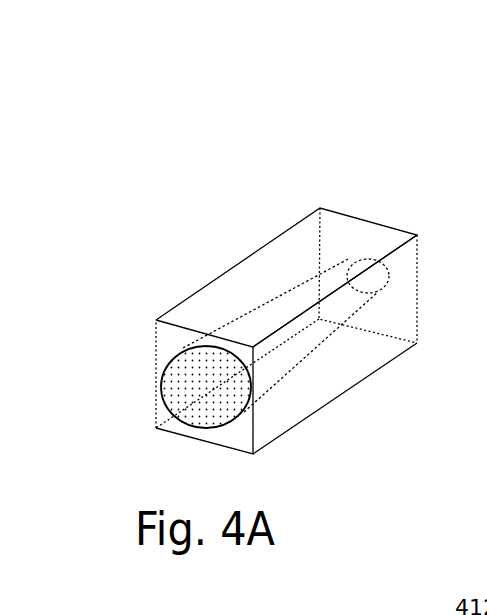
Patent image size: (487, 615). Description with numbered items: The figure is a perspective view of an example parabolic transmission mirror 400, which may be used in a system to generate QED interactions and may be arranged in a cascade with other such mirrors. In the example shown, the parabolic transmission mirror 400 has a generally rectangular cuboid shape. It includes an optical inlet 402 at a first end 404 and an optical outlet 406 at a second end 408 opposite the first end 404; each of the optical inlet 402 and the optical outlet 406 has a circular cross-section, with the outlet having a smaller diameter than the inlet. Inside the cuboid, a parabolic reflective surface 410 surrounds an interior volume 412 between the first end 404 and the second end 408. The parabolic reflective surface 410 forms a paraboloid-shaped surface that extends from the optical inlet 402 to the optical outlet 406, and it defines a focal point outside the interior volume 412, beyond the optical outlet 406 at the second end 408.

The parabolic transmission mirror 400 is at (424, 119).
The optical inlet 402 is at (163, 386).
The first end 404 is at (145, 297).
The optical outlet 406 is at (389, 276).
The second end 408 is at (300, 197).
The parabolic reflective surface 410 is at (253, 307).
The interior volume 412 is at (293, 281).